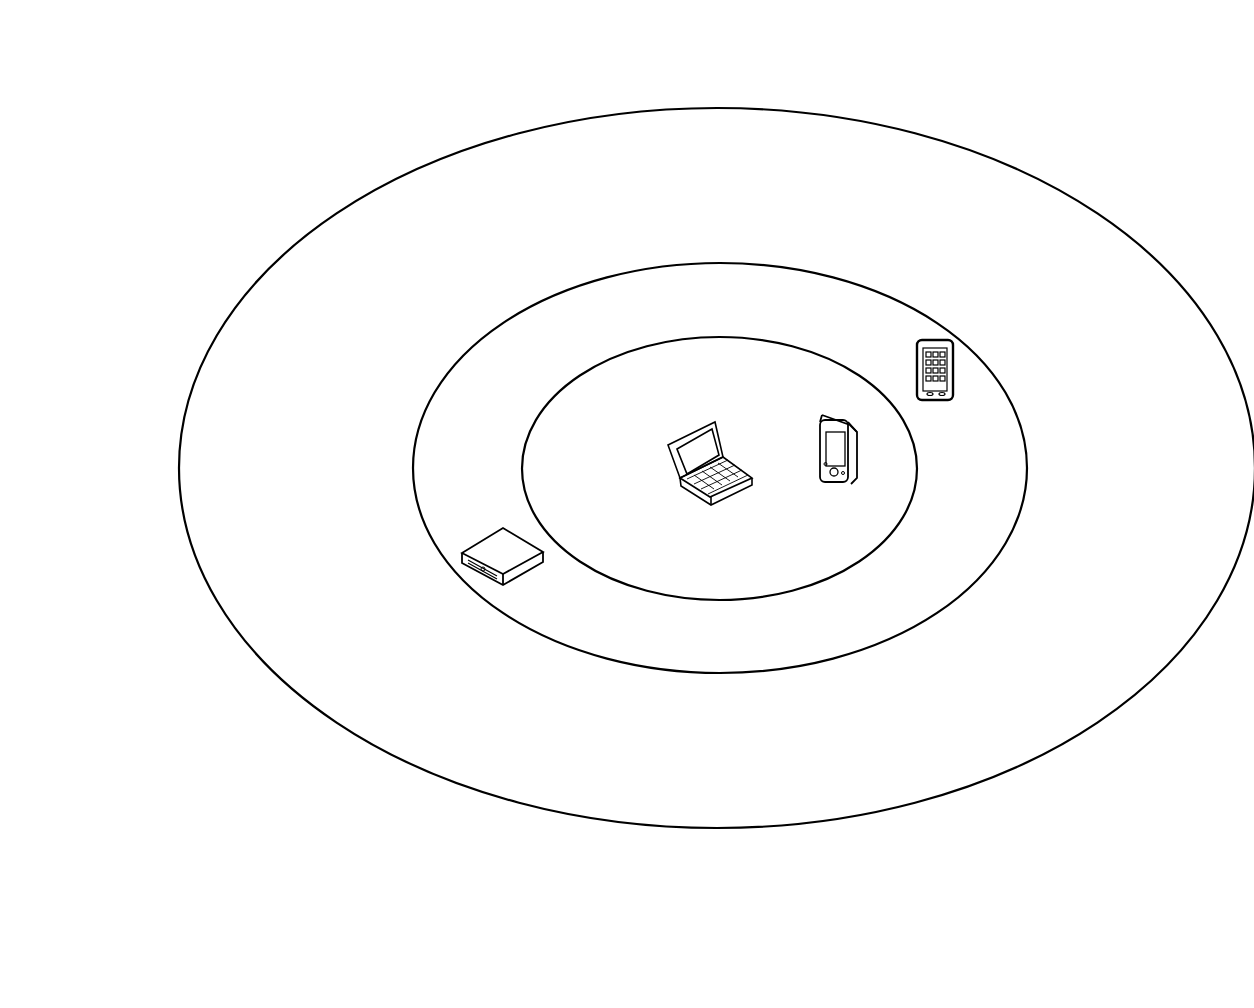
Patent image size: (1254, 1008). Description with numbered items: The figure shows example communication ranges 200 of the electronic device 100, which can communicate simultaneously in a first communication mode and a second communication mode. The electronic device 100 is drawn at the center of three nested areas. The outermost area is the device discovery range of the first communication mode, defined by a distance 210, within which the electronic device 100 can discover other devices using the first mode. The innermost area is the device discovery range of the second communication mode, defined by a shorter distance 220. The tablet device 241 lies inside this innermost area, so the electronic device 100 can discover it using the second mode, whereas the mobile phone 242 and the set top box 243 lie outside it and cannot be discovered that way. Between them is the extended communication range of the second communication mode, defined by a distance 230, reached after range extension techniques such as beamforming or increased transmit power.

The communication ranges 200 is at (126, 93).
The distance of device discovery range of first communication mode 210 is at (688, 436).
The distance of extended communication range of second communication mode 230 is at (688, 436).
The distance of device discovery range of second communication mode 220 is at (690, 437).
The electronic device 100 is at (733, 462).
The tablet device 241 is at (843, 421).
The mobile phone 242 is at (937, 399).
The set top box 243 is at (516, 577).